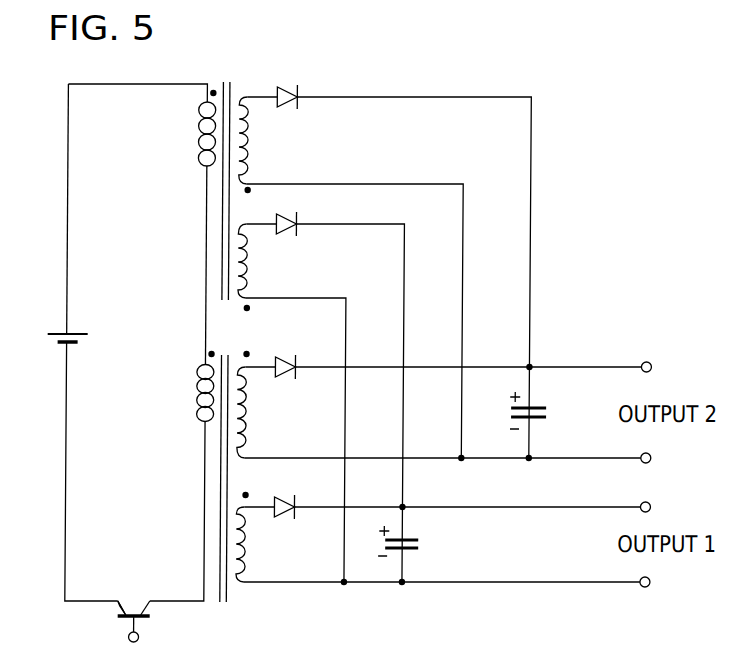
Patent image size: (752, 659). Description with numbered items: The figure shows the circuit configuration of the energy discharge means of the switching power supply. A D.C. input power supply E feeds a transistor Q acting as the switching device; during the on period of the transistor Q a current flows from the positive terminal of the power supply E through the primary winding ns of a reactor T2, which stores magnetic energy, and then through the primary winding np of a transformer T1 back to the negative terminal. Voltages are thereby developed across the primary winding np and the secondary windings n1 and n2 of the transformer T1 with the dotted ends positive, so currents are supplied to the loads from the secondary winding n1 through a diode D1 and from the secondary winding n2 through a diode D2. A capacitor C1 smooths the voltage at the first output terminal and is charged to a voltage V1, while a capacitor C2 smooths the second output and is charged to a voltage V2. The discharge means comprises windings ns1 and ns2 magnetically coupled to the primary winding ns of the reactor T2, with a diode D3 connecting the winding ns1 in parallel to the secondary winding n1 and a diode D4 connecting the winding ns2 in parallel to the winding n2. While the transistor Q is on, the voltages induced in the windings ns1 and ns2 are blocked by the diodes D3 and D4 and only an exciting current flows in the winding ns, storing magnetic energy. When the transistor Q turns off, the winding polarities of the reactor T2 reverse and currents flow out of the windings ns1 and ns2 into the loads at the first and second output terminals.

The D.C. input power supply E is at (47, 337).
The transistor Q is at (138, 599).
The transformer T1 is at (222, 609).
The reactor T2 is at (228, 79).
The primary winding of the reactor ns is at (200, 140).
The primary winding of the transformer np is at (195, 401).
The winding ns1 is at (256, 275).
The winding ns2 is at (256, 153).
The secondary winding n1 is at (255, 558).
The secondary winding n2 is at (256, 431).
The diode D1 is at (286, 512).
The diode D2 is at (283, 374).
The diode D3 is at (288, 231).
The diode D4 is at (288, 104).
The capacitor C1 is at (423, 545).
The capacitor C2 is at (549, 414).
The voltage V1 is at (369, 539).
The voltage V2 is at (496, 410).